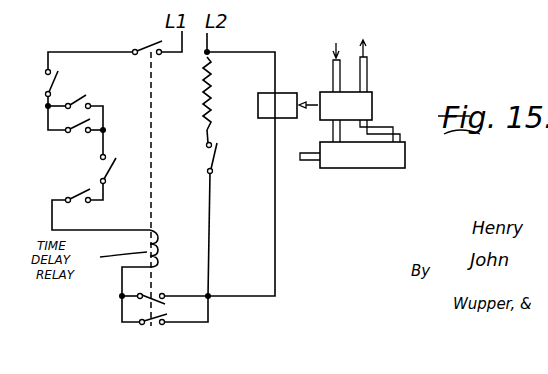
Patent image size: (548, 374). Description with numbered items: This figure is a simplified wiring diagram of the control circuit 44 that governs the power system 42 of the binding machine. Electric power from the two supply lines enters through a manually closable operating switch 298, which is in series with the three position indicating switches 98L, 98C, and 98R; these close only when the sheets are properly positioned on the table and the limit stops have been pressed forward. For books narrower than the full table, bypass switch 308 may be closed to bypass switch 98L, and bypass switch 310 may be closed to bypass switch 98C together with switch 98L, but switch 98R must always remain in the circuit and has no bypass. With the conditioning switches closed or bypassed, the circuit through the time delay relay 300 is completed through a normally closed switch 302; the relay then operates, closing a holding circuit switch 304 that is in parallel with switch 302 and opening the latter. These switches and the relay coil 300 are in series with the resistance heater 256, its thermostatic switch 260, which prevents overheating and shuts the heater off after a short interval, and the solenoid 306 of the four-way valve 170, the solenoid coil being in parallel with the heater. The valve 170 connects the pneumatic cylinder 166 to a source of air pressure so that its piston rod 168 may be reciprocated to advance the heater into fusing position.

The manually closable operating switch 298 is at (142, 47).
The bypass switch 308 is at (56, 80).
The position indicating switch 98L is at (89, 101).
The bypass switch 310 is at (113, 150).
The position indicating switch 98C is at (78, 140).
The position indicating switch 98R is at (80, 197).
The time delay relay 300 is at (158, 238).
The holding circuit switch 304 is at (157, 296).
The normally closed switch 302 is at (137, 311).
The resistance heater 256 is at (214, 82).
The solenoid 306 is at (258, 120).
The thermostatic switch 260 is at (217, 160).
The solenoid operated four-way valve 170 is at (363, 97).
The pneumatic cylinder 166 is at (368, 162).
The power system 42 is at (458, 172).
The piston rod 168 is at (307, 163).
The control circuit 44 is at (298, 236).